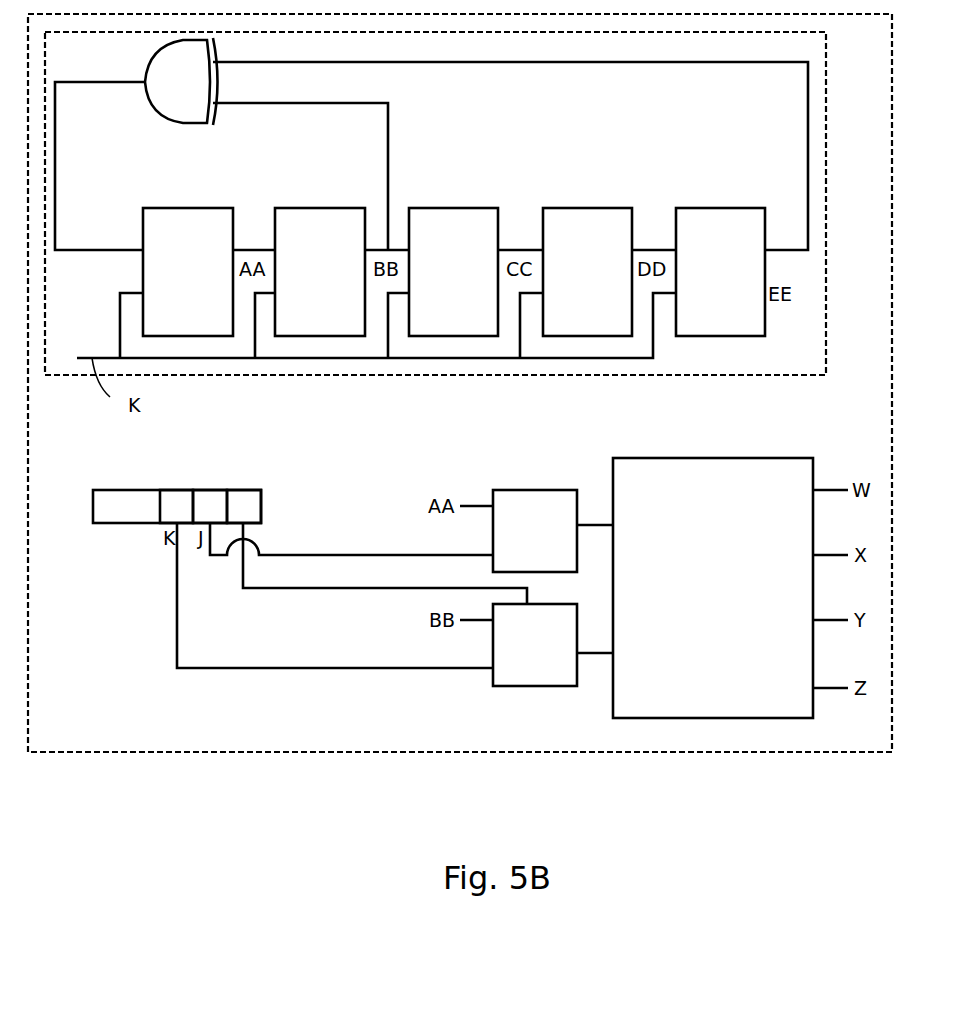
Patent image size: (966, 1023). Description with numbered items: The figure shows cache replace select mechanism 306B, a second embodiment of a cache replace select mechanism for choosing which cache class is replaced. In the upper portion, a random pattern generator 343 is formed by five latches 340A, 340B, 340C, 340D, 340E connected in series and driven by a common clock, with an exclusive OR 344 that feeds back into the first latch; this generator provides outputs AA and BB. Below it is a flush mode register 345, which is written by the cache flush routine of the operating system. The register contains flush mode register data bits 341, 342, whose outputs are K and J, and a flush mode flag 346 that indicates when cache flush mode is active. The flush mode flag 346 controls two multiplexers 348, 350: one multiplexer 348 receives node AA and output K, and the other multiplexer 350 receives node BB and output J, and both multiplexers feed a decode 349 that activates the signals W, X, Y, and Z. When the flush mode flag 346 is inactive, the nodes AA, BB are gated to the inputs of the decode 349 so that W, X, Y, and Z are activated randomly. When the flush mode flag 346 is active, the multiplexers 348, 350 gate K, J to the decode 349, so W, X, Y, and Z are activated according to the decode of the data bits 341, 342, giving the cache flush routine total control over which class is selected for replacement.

The cache replace select mechanism 306B is at (422, 752).
The random pattern generator 343 is at (410, 375).
The exclusive OR 344 is at (160, 112).
The latch 340A is at (167, 208).
The latch 340B is at (300, 208).
The latch 340C is at (433, 208).
The latch 340D is at (567, 208).
The latch 340E is at (700, 208).
The flush mode register 345 is at (222, 456).
The flush mode register data bit 341 is at (172, 490).
The flush mode register data bit 342 is at (208, 490).
The flush mode flag 346 is at (254, 438).
The multiplexer 348 is at (527, 490).
The multiplexer 350 is at (547, 686).
The decode 349 is at (678, 458).